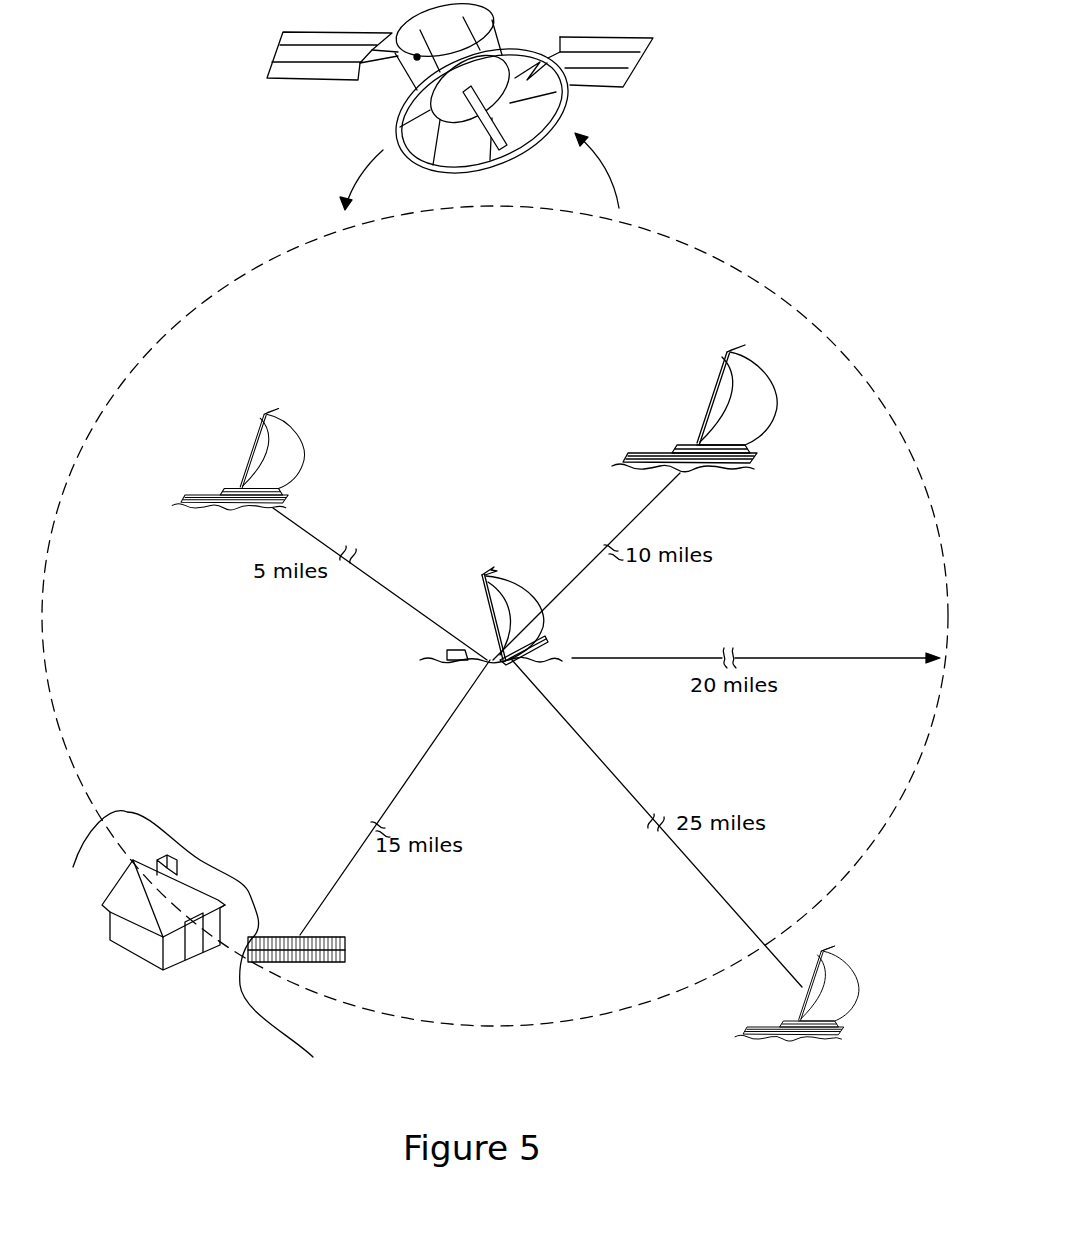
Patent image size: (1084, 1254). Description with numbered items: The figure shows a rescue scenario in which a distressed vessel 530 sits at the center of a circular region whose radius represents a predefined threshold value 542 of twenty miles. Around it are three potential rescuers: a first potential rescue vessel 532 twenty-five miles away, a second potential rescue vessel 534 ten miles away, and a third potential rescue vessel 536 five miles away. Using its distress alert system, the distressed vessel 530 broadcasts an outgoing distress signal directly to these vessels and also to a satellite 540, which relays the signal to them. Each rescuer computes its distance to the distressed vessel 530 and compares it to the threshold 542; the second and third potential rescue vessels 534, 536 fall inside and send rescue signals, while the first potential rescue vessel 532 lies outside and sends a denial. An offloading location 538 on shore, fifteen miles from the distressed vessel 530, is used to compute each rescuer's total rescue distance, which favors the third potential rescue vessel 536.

The distressed vessel 530 is at (528, 576).
The first potential rescue vessel 532 is at (862, 969).
The second potential rescue vessel 534 is at (655, 452).
The third potential rescue vessel 536 is at (305, 451).
The offloading location 538 is at (346, 951).
The satellite 540 is at (282, 52).
The predefined threshold value 542 is at (157, 338).